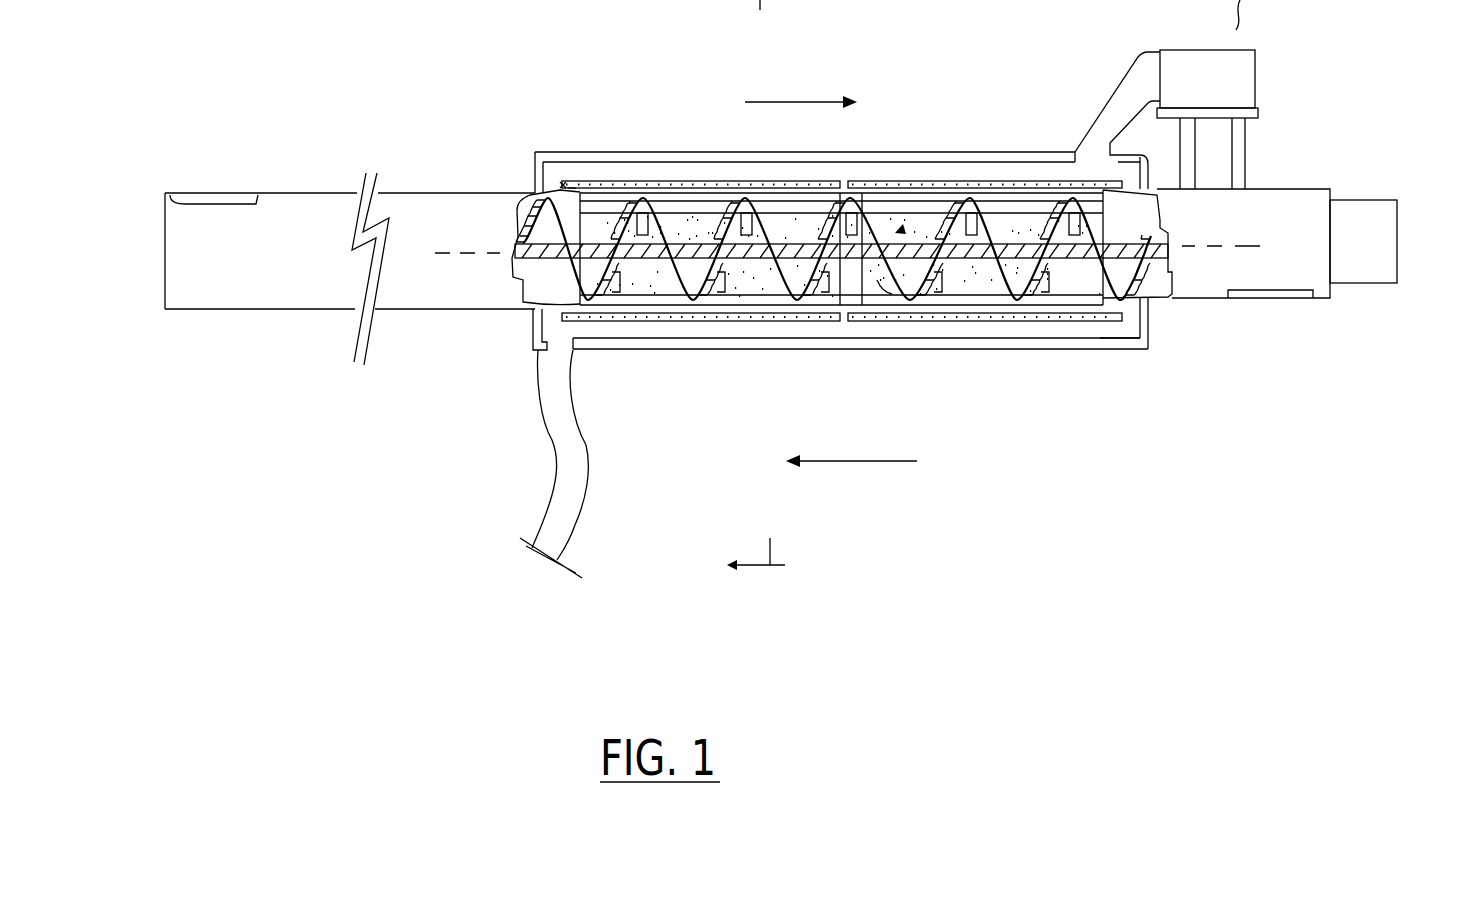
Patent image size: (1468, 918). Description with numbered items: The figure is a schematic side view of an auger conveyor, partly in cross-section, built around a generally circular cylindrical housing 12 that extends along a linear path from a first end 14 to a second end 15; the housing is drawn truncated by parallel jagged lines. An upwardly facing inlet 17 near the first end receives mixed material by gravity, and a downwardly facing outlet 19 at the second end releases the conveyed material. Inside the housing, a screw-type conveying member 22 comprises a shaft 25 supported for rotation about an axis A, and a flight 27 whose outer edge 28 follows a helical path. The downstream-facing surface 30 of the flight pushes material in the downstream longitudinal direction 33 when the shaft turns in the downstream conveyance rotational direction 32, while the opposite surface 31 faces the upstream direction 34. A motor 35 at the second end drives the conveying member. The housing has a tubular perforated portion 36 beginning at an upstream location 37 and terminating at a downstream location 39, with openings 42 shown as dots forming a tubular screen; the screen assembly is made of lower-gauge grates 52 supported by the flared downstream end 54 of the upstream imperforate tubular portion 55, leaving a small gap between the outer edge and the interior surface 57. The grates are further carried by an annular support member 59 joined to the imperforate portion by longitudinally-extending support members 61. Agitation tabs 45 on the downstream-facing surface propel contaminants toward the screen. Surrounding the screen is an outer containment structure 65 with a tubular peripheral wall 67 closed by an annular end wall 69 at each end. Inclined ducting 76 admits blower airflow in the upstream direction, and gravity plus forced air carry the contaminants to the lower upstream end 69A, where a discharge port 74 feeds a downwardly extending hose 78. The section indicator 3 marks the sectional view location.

The section line indicator 3 is at (756, 303).
The housing 12 is at (306, 193).
The first end 14 is at (163, 243).
The second end 15 is at (1333, 230).
The inlet 17 is at (201, 185).
The outlet 19 is at (1299, 306).
The conveying member 22 is at (1185, 232).
The shaft 25 is at (983, 270).
The flight 27 is at (1040, 300).
The outer edge 28 is at (925, 265).
The surface 30 is at (1000, 190).
The opposite surface 31 is at (880, 300).
The downstream conveyance rotational direction 32 is at (899, 226).
The downstream longitudinal direction 33 is at (781, 102).
The upstream longitudinal direction 34 is at (855, 463).
The motor 35 is at (1385, 198).
The tubular perforated portion 36 is at (749, 332).
The upstream location 37 is at (577, 182).
The downstream location 39 is at (1116, 329).
The openings 42 is at (811, 329).
The agitation tabs 45 is at (975, 185).
The grates 52 is at (670, 181).
The downstream end 54 is at (563, 177).
The upstream imperforate tubular portion 55 is at (458, 193).
The interior surface 57 is at (608, 192).
The annular support member 59 is at (838, 193).
The longitudinally-extending support members 61 is at (795, 203).
The outer containment structure 65 is at (648, 357).
The tubular peripheral wall 67 is at (680, 352).
The annular end wall 69 is at (1160, 340).
The lower upstream end 69A is at (530, 338).
The discharge port 74 is at (580, 360).
The ducting 76 is at (1100, 93).
The hose 78 is at (590, 455).
The axis A is at (1197, 362).